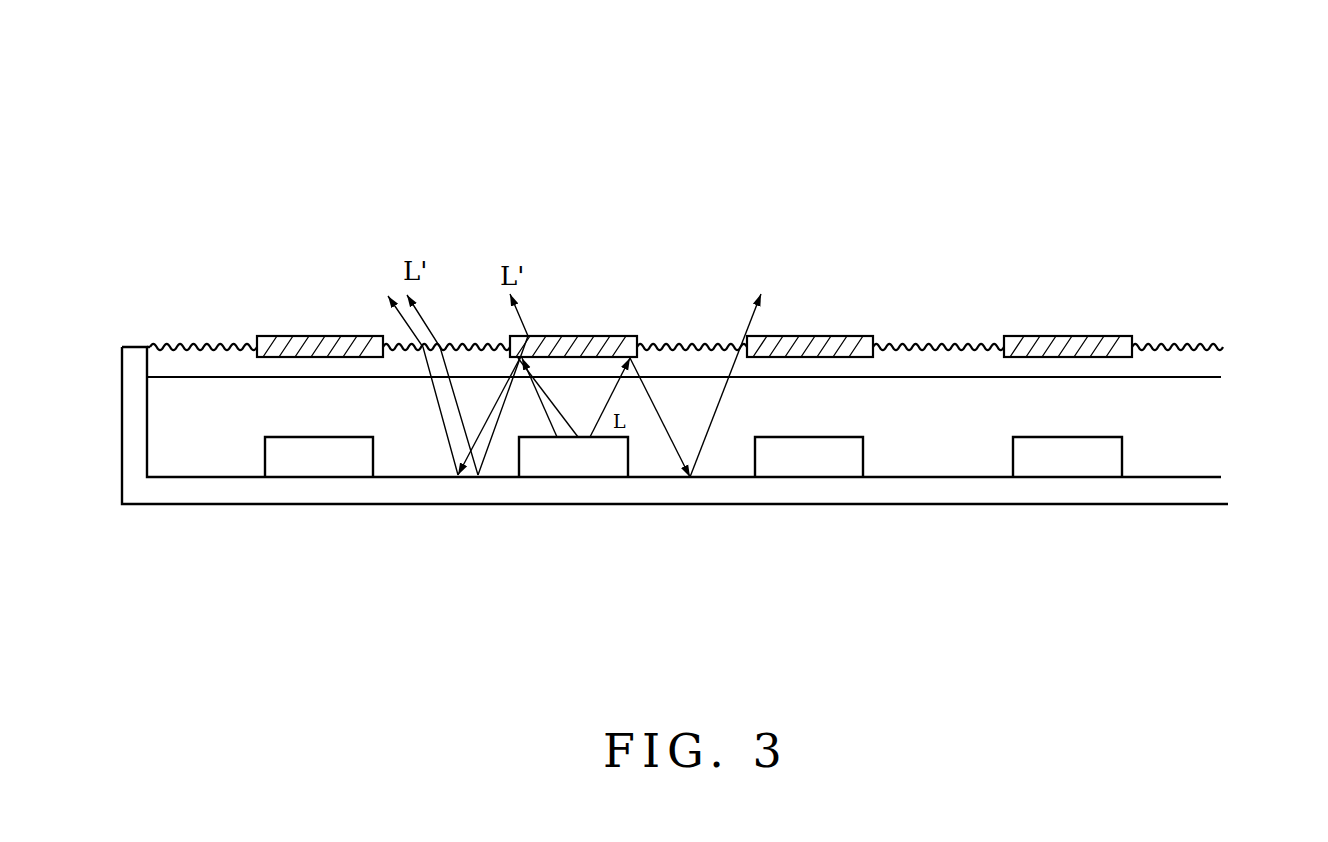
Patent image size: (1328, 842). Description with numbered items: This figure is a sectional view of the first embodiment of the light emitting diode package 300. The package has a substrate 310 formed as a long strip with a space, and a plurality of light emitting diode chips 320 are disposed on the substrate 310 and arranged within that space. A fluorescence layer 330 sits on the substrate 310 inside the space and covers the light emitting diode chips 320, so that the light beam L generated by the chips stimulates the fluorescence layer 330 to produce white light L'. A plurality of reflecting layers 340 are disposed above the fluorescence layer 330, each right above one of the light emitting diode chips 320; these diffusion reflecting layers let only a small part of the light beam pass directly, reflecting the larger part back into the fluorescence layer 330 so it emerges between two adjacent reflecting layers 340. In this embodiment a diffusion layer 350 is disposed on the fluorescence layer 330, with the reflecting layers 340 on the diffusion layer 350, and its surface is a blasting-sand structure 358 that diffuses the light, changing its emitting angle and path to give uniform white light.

The light emitting diode package 300 is at (1067, 107).
The substrate 310 is at (210, 490).
The light emitting diode chips 320 is at (573, 463).
The fluorescence layer 330 is at (173, 423).
The reflecting layers 340 is at (590, 348).
The diffusion layer 350 is at (1168, 363).
The blasting-sand structure 358 is at (1190, 343).